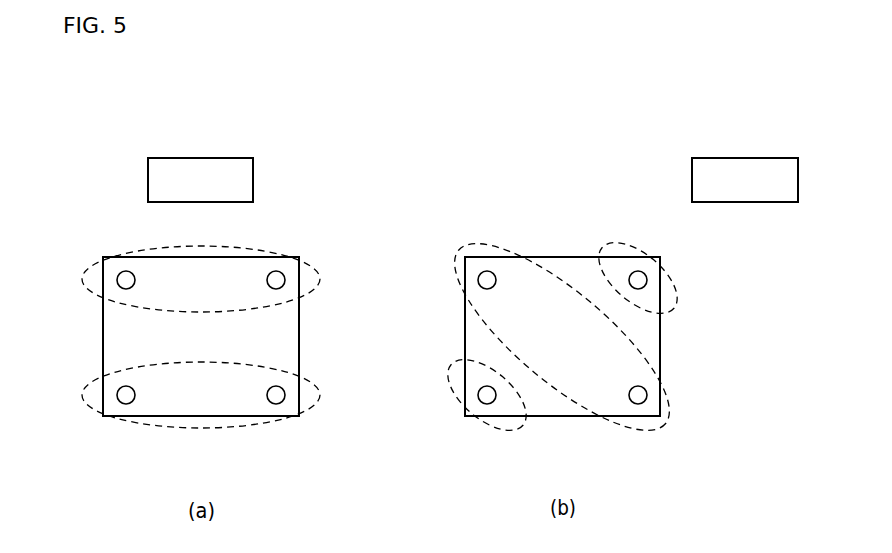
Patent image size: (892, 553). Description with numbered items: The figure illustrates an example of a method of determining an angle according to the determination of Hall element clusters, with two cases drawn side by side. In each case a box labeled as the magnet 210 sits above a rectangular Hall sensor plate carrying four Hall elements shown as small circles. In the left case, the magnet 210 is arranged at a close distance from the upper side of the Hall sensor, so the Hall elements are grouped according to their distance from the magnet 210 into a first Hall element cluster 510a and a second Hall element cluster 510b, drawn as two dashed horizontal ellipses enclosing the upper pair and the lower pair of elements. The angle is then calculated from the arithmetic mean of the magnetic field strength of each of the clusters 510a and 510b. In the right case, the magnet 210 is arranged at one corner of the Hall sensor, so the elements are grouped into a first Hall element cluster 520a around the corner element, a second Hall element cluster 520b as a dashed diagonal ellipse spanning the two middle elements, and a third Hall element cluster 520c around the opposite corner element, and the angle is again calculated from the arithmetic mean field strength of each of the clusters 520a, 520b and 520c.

The magnet 210 is at (203, 158).
The first Hall element cluster 510a is at (321, 282).
The second Hall element cluster 510b is at (321, 397).
The first Hall element cluster 520a is at (675, 303).
The second Hall element cluster 520b is at (670, 415).
The third Hall element cluster 520c is at (528, 428).